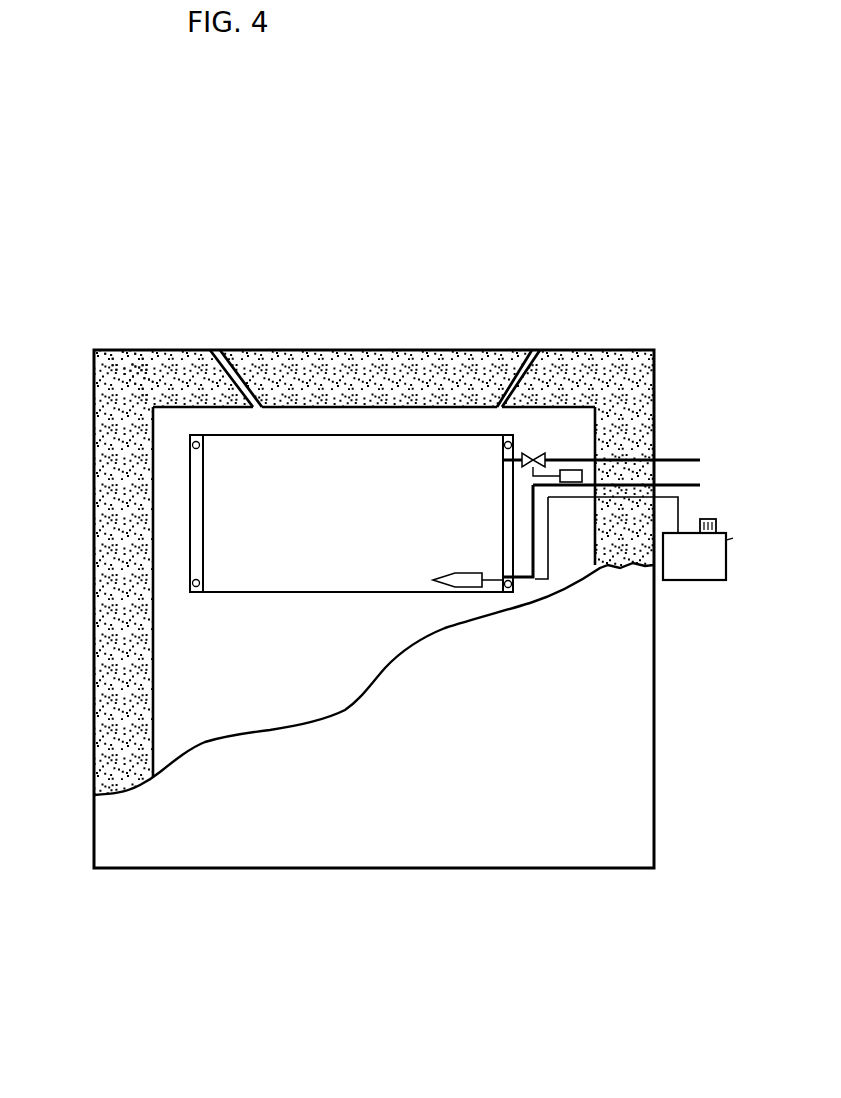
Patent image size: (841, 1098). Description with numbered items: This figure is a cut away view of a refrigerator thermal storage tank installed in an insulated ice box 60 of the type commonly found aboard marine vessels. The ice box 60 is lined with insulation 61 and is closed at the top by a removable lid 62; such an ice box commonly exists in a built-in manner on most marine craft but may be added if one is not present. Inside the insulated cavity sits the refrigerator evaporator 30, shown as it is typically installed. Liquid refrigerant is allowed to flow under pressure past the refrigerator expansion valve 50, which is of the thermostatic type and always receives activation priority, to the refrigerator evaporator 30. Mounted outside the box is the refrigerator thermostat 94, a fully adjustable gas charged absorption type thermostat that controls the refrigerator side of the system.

The refrigerator evaporator 30 is at (208, 497).
The refrigerator expansion valve 50 is at (540, 442).
The ice box 60 is at (597, 835).
The insulation 61 is at (118, 582).
The removable lid 62 is at (455, 372).
The refrigerator thermostat 94 is at (677, 573).